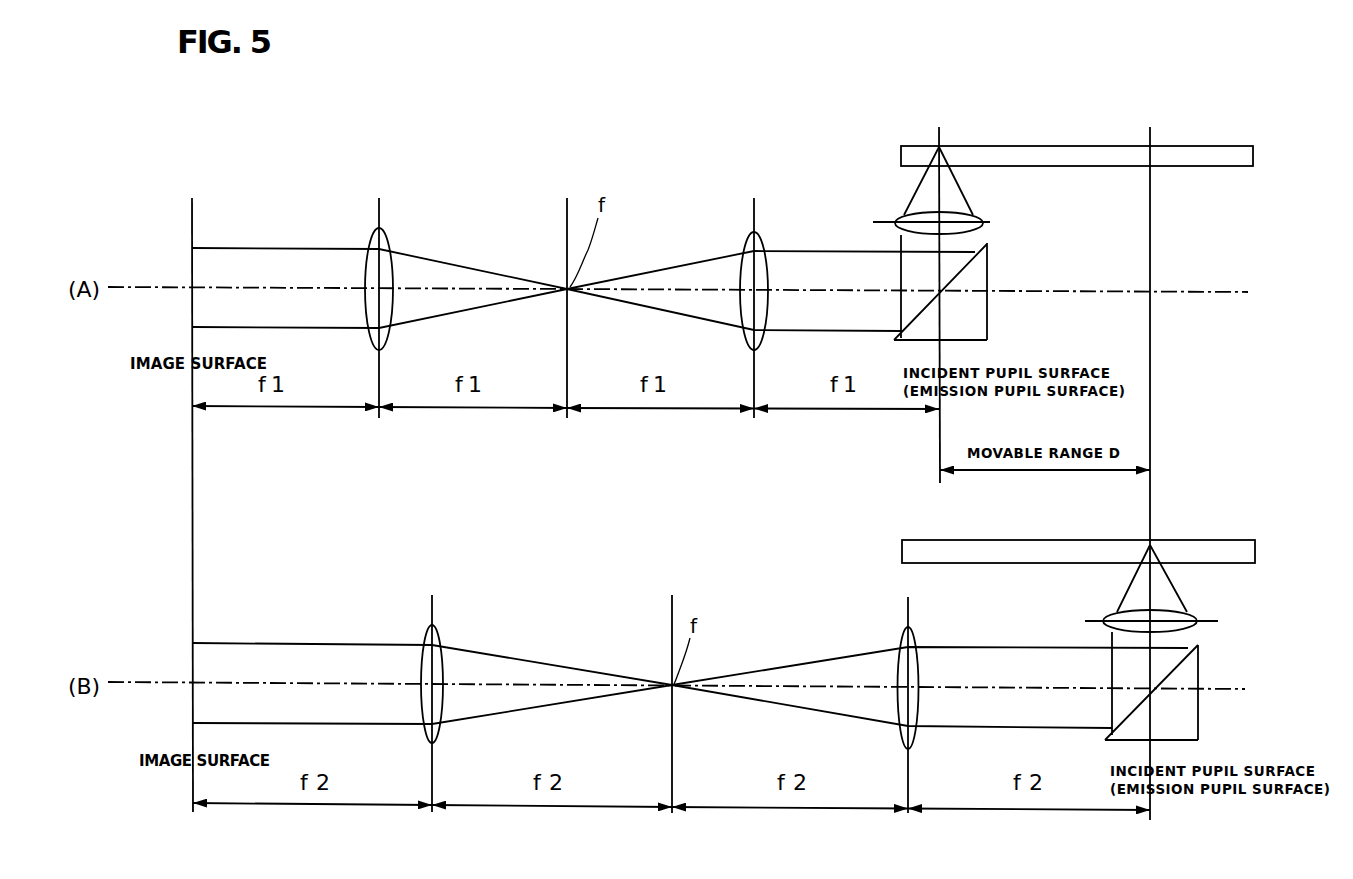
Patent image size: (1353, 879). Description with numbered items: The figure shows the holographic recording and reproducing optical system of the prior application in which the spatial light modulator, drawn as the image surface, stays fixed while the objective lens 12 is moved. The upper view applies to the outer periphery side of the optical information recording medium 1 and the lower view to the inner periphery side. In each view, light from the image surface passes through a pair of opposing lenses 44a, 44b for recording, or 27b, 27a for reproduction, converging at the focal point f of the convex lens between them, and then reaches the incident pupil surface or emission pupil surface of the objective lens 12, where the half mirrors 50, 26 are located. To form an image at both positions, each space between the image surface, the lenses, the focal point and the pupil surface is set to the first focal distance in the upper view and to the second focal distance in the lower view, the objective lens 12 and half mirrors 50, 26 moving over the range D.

In FIG. 5A, the optical information recording medium 1 is at (1053, 135).
In FIG. 5B, the optical information recording medium 1 is at (1195, 529).
In FIG. 5A, the objective lens 12 is at (990, 222).
In FIG. 5B, the objective lens 12 is at (1196, 614).
In FIG. 5A, the half mirror 50 is at (998, 290).
In FIG. 5B, the half mirror 50 is at (1193, 689).
In FIG. 5A, the half mirror 26 is at (998, 290).
In FIG. 5B, the half mirror 26 is at (1194, 722).
In FIG. 5A, the lens 44a is at (404, 283).
In FIG. 5B, the lens 44a is at (427, 680).
In FIG. 5A, the lens 27b is at (385, 229).
In FIG. 5B, the lens 27b is at (437, 626).
In FIG. 5A, the lens 44b is at (766, 290).
In FIG. 5B, the lens 44b is at (957, 699).
In FIG. 5A, the lens 27a is at (764, 243).
In FIG. 5B, the lens 27a is at (915, 634).